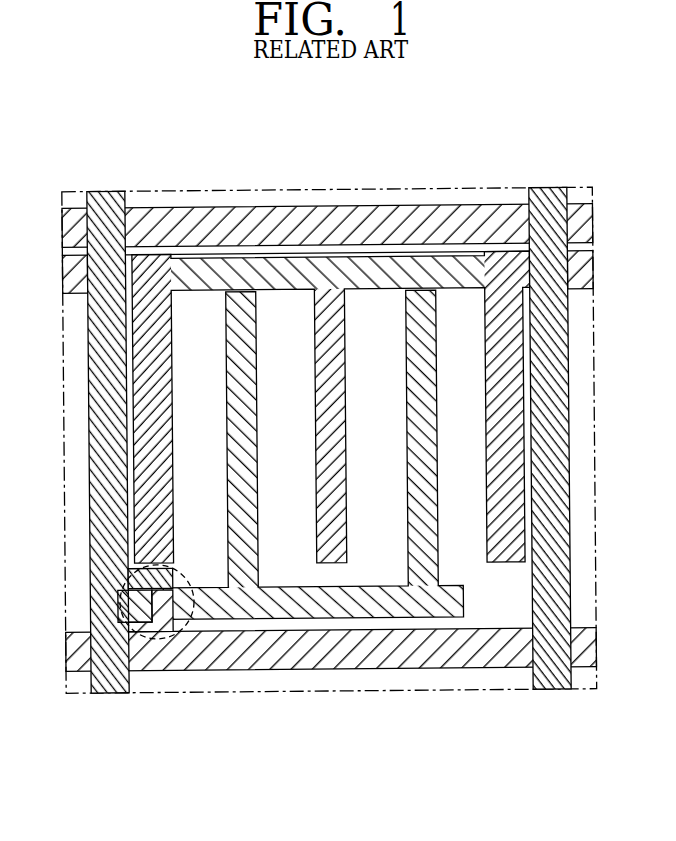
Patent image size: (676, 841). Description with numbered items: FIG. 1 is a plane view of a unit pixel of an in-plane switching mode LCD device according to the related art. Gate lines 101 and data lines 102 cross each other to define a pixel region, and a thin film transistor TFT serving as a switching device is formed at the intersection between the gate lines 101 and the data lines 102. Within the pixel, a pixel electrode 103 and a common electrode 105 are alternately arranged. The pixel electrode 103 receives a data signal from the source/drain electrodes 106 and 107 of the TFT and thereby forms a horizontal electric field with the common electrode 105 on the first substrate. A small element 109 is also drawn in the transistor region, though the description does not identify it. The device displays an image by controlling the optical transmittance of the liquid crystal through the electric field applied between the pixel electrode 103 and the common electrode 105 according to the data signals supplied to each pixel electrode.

The gate line 101 is at (73, 653).
The data line 102 is at (107, 190).
The pixel electrode 103 is at (245, 308).
The common electrode 105 is at (331, 308).
The source/drain electrode 106 is at (137, 614).
The source/drain electrode 107 is at (168, 614).
The gate electrode 109 is at (142, 572).
The thin film transistor TFT is at (111, 614).